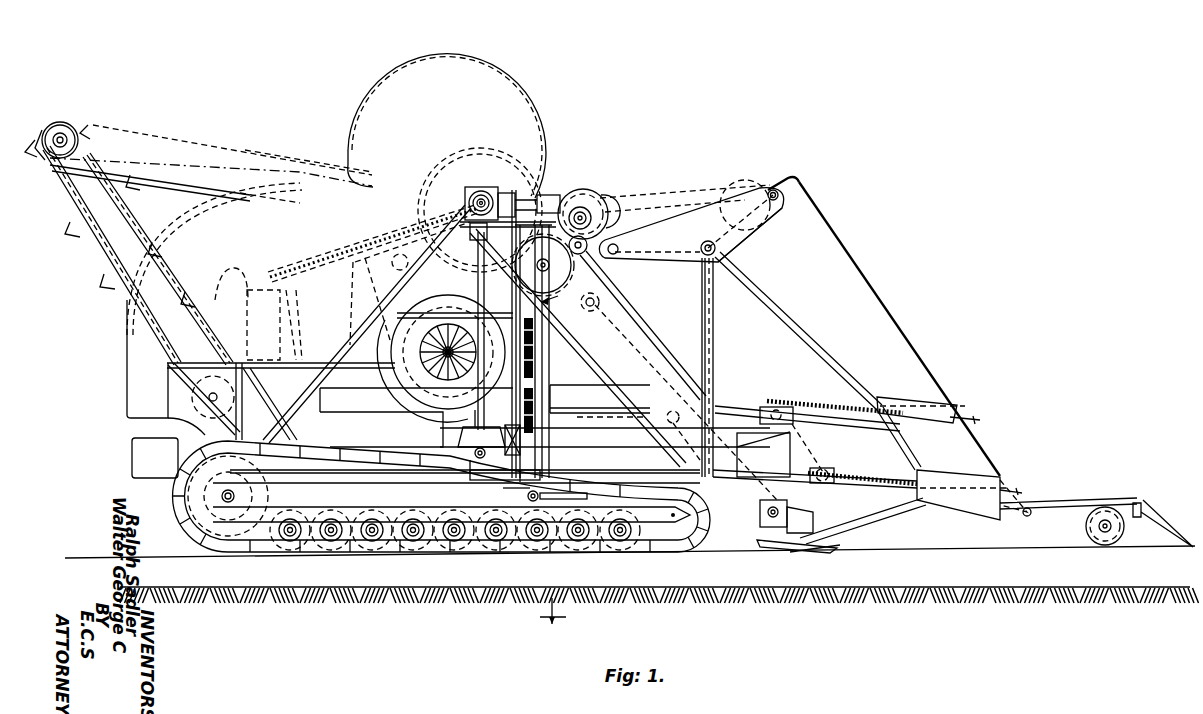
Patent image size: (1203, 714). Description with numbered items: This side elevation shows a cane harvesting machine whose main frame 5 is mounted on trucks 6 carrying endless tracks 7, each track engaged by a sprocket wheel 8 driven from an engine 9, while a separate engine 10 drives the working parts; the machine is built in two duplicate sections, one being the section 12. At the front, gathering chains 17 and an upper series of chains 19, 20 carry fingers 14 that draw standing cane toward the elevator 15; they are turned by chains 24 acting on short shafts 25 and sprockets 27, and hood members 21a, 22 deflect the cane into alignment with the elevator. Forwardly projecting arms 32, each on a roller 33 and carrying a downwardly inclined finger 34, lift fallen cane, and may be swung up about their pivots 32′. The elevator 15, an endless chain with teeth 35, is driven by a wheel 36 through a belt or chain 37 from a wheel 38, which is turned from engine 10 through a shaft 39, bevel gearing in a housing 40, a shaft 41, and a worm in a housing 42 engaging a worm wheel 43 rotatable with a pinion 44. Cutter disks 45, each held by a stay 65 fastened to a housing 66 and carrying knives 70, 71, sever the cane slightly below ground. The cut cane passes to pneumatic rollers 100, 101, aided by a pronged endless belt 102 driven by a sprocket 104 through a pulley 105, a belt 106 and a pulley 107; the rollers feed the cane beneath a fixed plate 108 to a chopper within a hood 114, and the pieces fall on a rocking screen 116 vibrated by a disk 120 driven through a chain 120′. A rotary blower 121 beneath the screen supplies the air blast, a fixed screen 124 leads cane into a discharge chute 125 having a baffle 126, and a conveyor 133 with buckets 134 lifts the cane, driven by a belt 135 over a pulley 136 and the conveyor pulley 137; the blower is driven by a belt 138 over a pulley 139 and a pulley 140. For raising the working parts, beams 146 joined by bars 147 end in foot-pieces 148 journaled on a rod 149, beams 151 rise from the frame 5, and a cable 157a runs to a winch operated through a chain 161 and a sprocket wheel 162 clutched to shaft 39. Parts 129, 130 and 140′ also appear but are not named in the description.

The main frame 5 is at (410, 478).
The trucks 6 is at (455, 526).
The endless tracks 7 is at (347, 546).
The sprocket wheel 8 is at (190, 505).
The engine 9 is at (381, 429).
The engine 10 is at (615, 452).
The section 12 is at (560, 463).
The fingers 14 is at (975, 418).
The elevator 15 is at (618, 354).
The gathering chains 17 is at (872, 474).
The gathering chains 19 is at (805, 402).
The gathering chains 20 is at (600, 401).
The hood member 21a is at (857, 329).
The hood member 22 is at (675, 410).
The chains 24 is at (903, 406).
The short shafts 25 is at (827, 470).
The sprockets 27 is at (777, 406).
The arms 32 is at (1082, 503).
The pivots 32′ is at (1030, 508).
The roller 33 is at (1085, 528).
The finger 34 is at (1155, 512).
The teeth 35 is at (632, 338).
The wheel 36 is at (600, 302).
The belt or chain 37 is at (598, 265).
The wheel 38 is at (580, 255).
The shaft 39 is at (478, 275).
The housing 40 is at (498, 196).
The shaft 41 is at (550, 196).
The housing 42 is at (607, 197).
The worm wheel 43 is at (603, 196).
The pinion 44 is at (618, 206).
The cutter disks 45 is at (780, 547).
The stay 65 is at (880, 512).
The housing 66 is at (815, 516).
The knife 70 is at (765, 518).
The knife 71 is at (812, 547).
The roller 100 is at (583, 190).
The roller 101 is at (543, 265).
The endless belt 102 is at (720, 254).
The sprocket 104 is at (740, 190).
The pulley 105 is at (464, 188).
The belt 106 is at (695, 186).
The pulley 107 is at (771, 188).
The fixed blade or plate 108 is at (778, 206).
The hood 114 is at (487, 80).
The screen 116 is at (352, 266).
The disk 120 is at (405, 258).
The chain 120′ is at (374, 275).
The rotary fan or blower 121 is at (412, 350).
The fixed screen 124 is at (292, 300).
The discharge chute 125 is at (262, 318).
The baffle 126 is at (240, 268).
The hopper 129 is at (300, 166).
The housing 130 is at (127, 405).
The conveyor 133 is at (145, 212).
The buckets 134 is at (112, 290).
The belt 135 is at (245, 148).
The pulley 136 is at (742, 232).
The pulley 137 is at (61, 130).
The belt 138 is at (463, 435).
The pulley 139 is at (395, 368).
The pulley 140 is at (532, 373).
The elevator base 140′ is at (495, 478).
The beams 146 is at (506, 497).
The bars 147 is at (500, 318).
The foot-piece 148 is at (503, 488).
The rod 149 is at (569, 497).
The beam 151 is at (520, 305).
The cable or wire rope 157a is at (587, 306).
The chain 161 is at (512, 430).
The sprocket wheel 162 is at (425, 404).